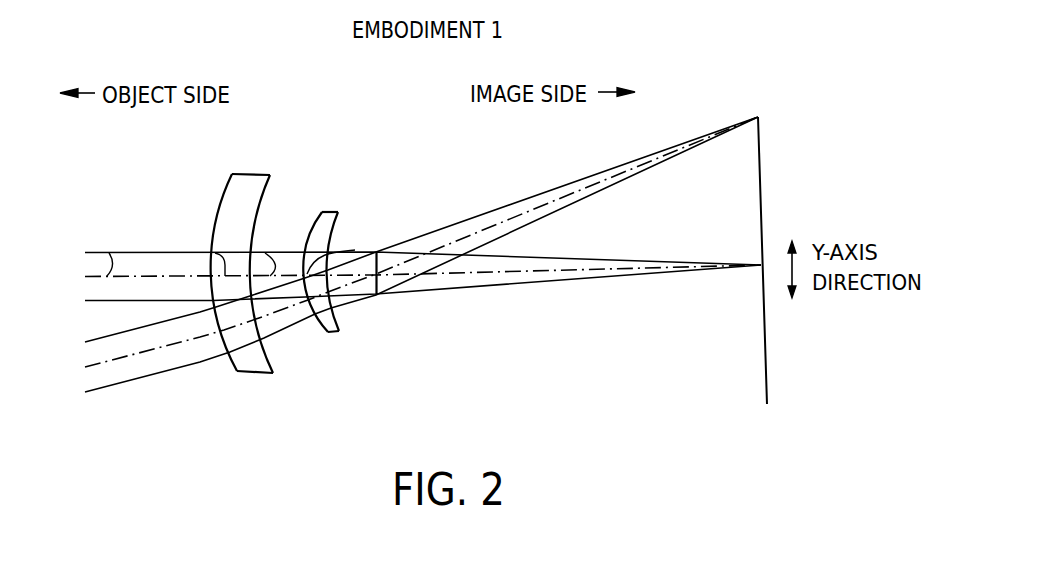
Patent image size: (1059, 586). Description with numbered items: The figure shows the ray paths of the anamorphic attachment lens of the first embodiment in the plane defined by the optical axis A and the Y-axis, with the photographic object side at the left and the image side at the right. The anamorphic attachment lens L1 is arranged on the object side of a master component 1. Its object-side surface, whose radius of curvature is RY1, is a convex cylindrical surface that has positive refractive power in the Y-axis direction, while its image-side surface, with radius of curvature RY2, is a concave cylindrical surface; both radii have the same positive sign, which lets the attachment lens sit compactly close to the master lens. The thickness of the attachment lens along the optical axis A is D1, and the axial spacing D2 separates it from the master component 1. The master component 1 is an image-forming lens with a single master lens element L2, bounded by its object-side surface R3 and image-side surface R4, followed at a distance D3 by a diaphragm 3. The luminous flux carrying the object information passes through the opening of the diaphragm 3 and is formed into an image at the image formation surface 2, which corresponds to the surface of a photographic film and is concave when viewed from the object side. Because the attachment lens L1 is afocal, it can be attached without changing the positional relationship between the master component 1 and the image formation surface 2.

The master component 1 is at (272, 294).
The image formation surface 2 is at (762, 335).
The diaphragm 3 is at (378, 297).
The anamorphic attachment lens L1 is at (249, 286).
The master lens element L2 is at (335, 284).
The radius of curvature of the object-side cylindrical surface of the attachment len RY1 is at (224, 189).
The radius of curvature of the image-side cylindrical surface of the attachment lens RY2 is at (268, 178).
The object-side surface of the master lens element R3 is at (313, 227).
The image-side surface of the master lens element R4 is at (339, 227).
The thickness of the attachment lens D1 is at (208, 248).
The spacing between the attachment lens and the master lens D2 is at (270, 248).
The spacing between the master lens and the diaphragm D3 is at (357, 248).
The optical axis A is at (105, 248).